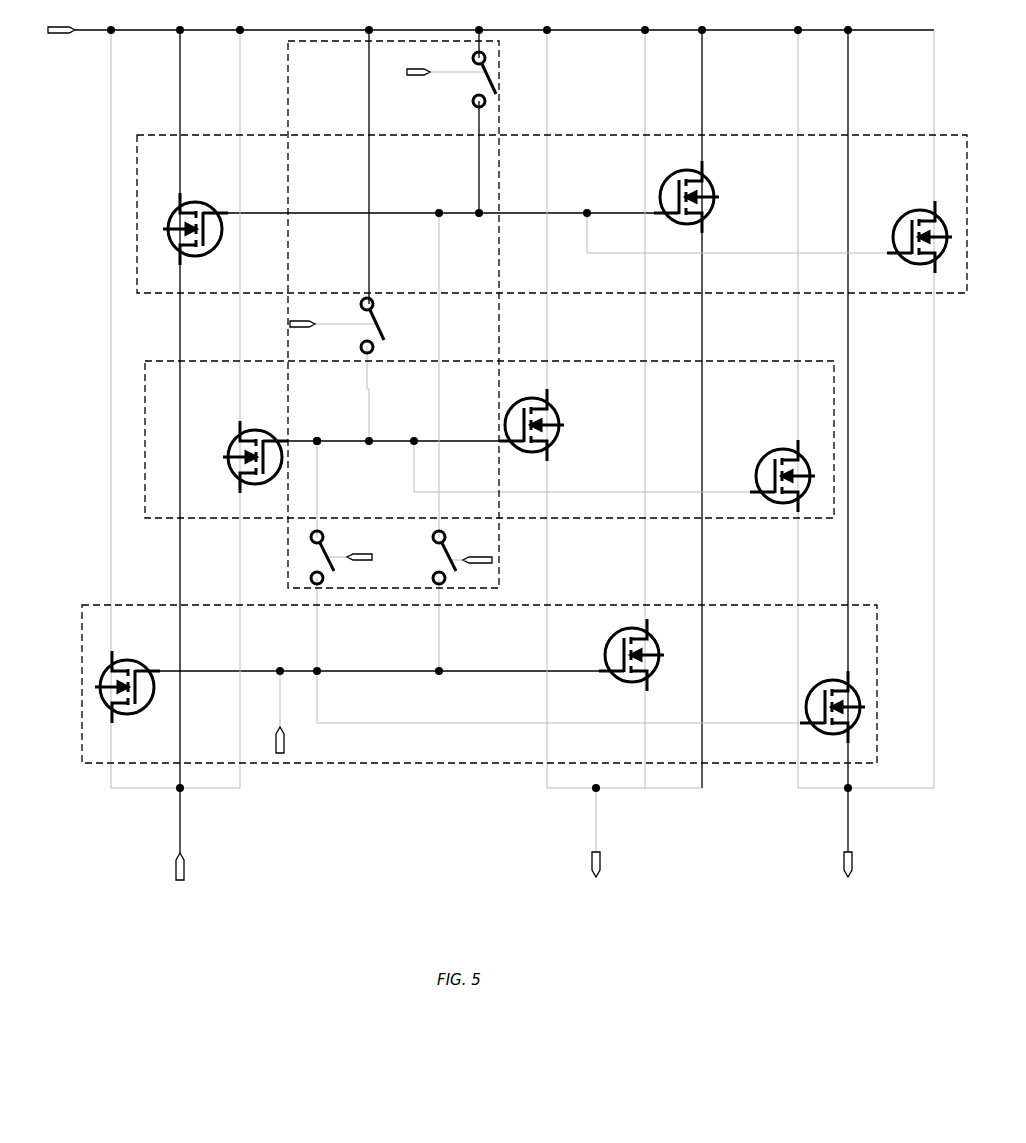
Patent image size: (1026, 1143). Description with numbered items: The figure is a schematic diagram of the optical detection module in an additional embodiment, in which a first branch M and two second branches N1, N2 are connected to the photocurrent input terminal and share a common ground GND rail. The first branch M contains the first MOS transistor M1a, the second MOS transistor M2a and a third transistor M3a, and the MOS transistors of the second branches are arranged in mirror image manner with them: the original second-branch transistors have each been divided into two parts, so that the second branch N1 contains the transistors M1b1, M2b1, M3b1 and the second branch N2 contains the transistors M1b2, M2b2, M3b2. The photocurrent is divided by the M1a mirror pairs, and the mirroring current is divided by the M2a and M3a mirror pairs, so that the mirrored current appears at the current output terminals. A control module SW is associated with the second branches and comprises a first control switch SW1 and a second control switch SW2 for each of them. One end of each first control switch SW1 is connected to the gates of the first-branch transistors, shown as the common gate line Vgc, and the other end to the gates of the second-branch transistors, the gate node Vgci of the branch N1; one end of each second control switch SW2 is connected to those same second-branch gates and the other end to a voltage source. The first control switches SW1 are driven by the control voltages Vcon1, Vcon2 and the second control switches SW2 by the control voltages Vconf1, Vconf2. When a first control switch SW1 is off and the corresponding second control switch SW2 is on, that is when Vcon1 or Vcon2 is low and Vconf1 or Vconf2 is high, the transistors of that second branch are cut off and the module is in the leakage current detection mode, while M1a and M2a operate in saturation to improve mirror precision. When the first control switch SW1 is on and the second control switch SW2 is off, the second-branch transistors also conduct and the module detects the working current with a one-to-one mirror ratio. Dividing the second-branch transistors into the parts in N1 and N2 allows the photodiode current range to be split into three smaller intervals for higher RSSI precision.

The ground GND is at (68, 22).
The second branch N2 is at (170, 135).
The second branch N1 is at (162, 361).
The first branch M is at (153, 603).
The control module SW is at (500, 346).
The first control switch SW1 is at (362, 557).
The second control switch SW2 is at (408, 201).
The first MOS transistor M1a is at (127, 696).
The second MOS transistor M2a is at (631, 648).
The third MOS transistor M3a is at (832, 700).
The MOS transistor M1b1 is at (255, 466).
The MOS transistor M2b1 is at (531, 418).
The MOS transistor M3b1 is at (782, 469).
The MOS transistor M1b2 is at (195, 238).
The MOS transistor M2b2 is at (686, 190).
The MOS transistor M3b2 is at (919, 230).
The control voltage Vconf1 is at (314, 338).
The control voltage Vconf2 is at (418, 84).
The control voltage Vcon1 is at (363, 547).
The control voltage Vcon2 is at (478, 548).
The gate control voltage terminal Vgc is at (296, 740).
The internal gate control node Vgci is at (319, 434).